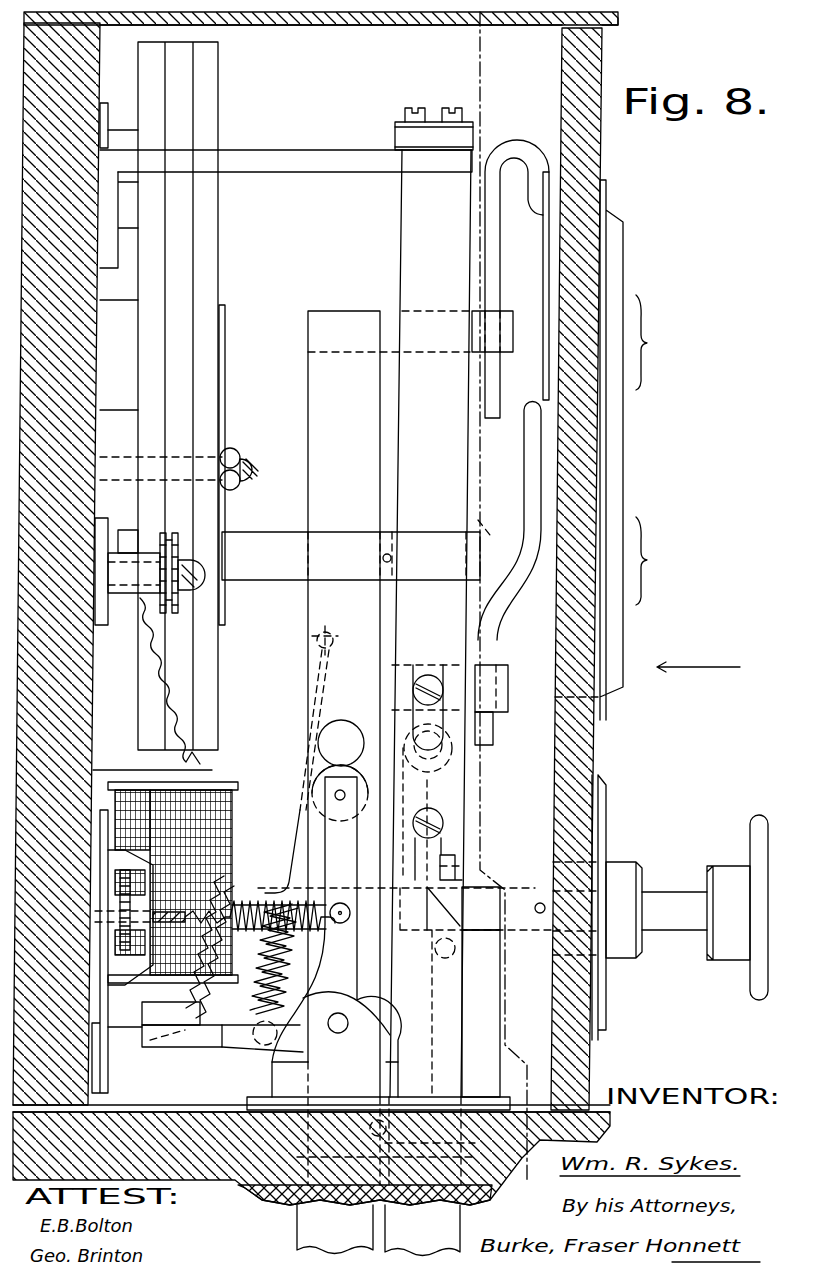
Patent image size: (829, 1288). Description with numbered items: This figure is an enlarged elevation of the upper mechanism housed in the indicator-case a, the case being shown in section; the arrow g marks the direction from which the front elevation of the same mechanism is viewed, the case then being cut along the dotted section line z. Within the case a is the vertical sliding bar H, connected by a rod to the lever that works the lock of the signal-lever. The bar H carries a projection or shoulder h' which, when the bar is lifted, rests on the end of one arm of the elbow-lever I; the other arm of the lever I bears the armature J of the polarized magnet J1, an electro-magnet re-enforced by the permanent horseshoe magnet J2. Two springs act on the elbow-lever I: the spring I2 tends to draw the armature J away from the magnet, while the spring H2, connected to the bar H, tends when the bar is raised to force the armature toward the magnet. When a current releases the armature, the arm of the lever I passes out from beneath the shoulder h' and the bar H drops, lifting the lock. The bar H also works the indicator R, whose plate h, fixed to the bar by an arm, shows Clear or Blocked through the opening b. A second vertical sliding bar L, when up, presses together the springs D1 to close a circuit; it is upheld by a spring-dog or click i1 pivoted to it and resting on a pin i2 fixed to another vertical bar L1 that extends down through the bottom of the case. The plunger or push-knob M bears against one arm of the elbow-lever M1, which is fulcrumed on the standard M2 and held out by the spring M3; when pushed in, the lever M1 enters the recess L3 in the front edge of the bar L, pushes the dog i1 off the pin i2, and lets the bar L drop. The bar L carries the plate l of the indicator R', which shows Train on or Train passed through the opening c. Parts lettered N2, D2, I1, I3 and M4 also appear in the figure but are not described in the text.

The indicator-case a is at (315, 608).
The bracket block N2 is at (119, 256).
The cross bar D2 is at (286, 151).
The springs D1 is at (420, 129).
The permanent or horseshoe magnet J2 is at (176, 403).
The sliding bar H is at (383, 782).
The vertical sliding bar L is at (409, 667).
The vertical bar L1 is at (415, 1147).
The recess L3 is at (456, 898).
The spring-dog or click i1 is at (438, 910).
The elbow-lever M1 is at (503, 908).
The standard M2 is at (481, 1013).
The pin i2 is at (445, 947).
The section line z is at (502, 598).
The plate h is at (510, 279).
The plate l is at (510, 574).
The indicator R is at (615, 450).
The opening b is at (649, 342).
The indicator R' is at (621, 771).
The opening c is at (648, 561).
The arrow g is at (698, 658).
The plunger or push-knob M is at (687, 907).
The polarized magnet J1 is at (172, 876).
The elbow-lever I is at (246, 929).
The lever pivot I1 is at (342, 1014).
The lever base I3 is at (378, 1086).
The armature J is at (171, 1013).
The spring I2 is at (240, 905).
The spring M3 is at (220, 1012).
The spring H2 is at (299, 812).
The projection or shoulder h' is at (341, 743).
The screw M4 is at (447, 784).